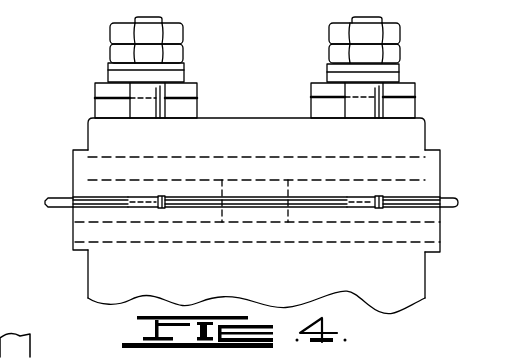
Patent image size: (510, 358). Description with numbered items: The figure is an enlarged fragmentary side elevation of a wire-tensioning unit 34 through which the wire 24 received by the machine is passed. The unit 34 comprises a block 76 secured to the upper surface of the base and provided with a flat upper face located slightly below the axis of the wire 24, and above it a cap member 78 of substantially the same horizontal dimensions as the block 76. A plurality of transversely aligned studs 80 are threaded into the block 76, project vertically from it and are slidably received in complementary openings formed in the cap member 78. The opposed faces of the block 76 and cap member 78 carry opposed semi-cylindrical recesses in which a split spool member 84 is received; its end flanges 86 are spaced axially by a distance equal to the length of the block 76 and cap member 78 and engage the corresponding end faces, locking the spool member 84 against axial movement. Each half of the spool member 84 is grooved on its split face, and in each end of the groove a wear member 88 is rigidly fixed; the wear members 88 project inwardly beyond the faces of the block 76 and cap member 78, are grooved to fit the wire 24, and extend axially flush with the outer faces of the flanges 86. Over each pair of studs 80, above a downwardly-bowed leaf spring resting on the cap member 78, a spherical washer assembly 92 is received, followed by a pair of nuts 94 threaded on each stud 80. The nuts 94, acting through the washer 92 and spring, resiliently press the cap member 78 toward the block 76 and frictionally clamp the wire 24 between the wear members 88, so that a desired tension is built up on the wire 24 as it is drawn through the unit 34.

The wire 24 is at (53, 196).
The wire-tensioning unit 34 is at (243, 117).
The block 76 is at (288, 270).
The cap member 78 is at (305, 143).
The studs 80 is at (128, 97).
The split spool member 84 is at (182, 157).
The end flanges 86 is at (73, 157).
The wear members 88 is at (105, 222).
The spherical washer assembly 92 is at (184, 72).
The nuts 94 is at (180, 53).